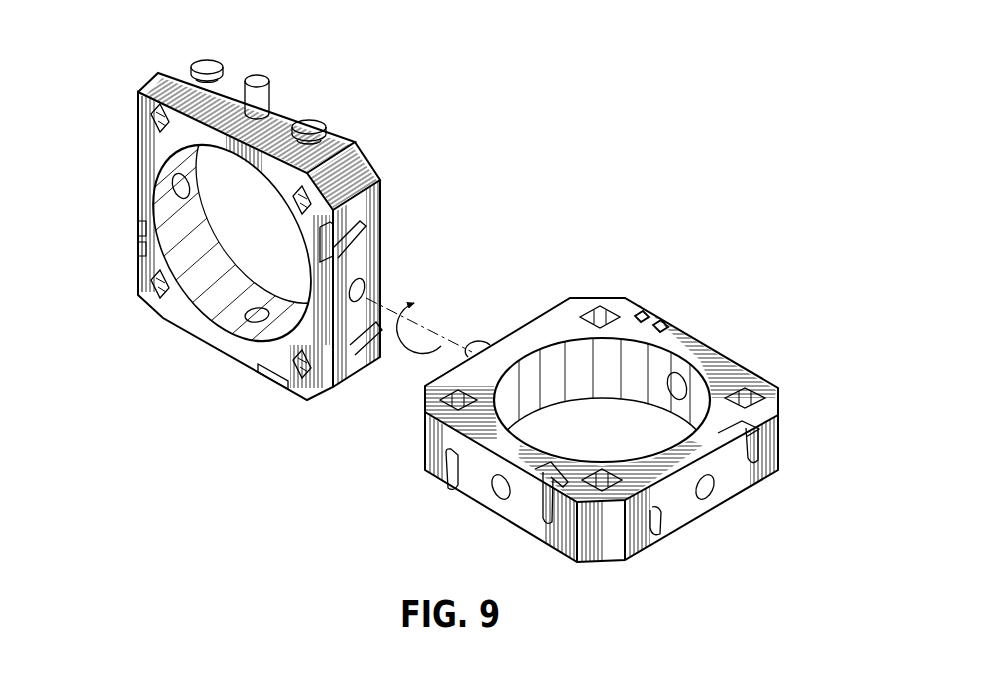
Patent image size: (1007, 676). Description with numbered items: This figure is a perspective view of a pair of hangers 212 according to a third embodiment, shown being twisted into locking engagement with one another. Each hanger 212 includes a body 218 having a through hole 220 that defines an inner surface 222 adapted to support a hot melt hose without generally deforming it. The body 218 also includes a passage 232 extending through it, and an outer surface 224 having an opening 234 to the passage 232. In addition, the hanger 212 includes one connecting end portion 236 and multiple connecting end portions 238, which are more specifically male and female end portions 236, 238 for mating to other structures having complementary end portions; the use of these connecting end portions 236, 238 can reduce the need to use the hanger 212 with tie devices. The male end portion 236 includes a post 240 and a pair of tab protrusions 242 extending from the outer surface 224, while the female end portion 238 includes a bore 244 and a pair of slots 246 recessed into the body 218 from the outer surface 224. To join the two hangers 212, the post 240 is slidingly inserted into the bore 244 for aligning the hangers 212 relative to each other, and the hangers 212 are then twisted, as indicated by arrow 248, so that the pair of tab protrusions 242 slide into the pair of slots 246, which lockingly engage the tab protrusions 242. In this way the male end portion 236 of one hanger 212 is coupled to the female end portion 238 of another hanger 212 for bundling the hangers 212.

The hanger 212 is at (340, 58).
The body 218 is at (163, 86).
The through hole 220 is at (217, 301).
The inner surface 222 is at (205, 286).
The outer surface 224 is at (343, 135).
The passage 232 is at (152, 118).
The opening 234 is at (151, 109).
The connecting end portion (male end portion) 236 is at (287, 72).
The connecting end portions (female end portions) 238 is at (118, 203).
The post 240 is at (257, 75).
The tab protrusions 242 is at (209, 60).
The bore 244 is at (189, 191).
The slots 246 is at (138, 233).
The arrow 248 is at (441, 346).